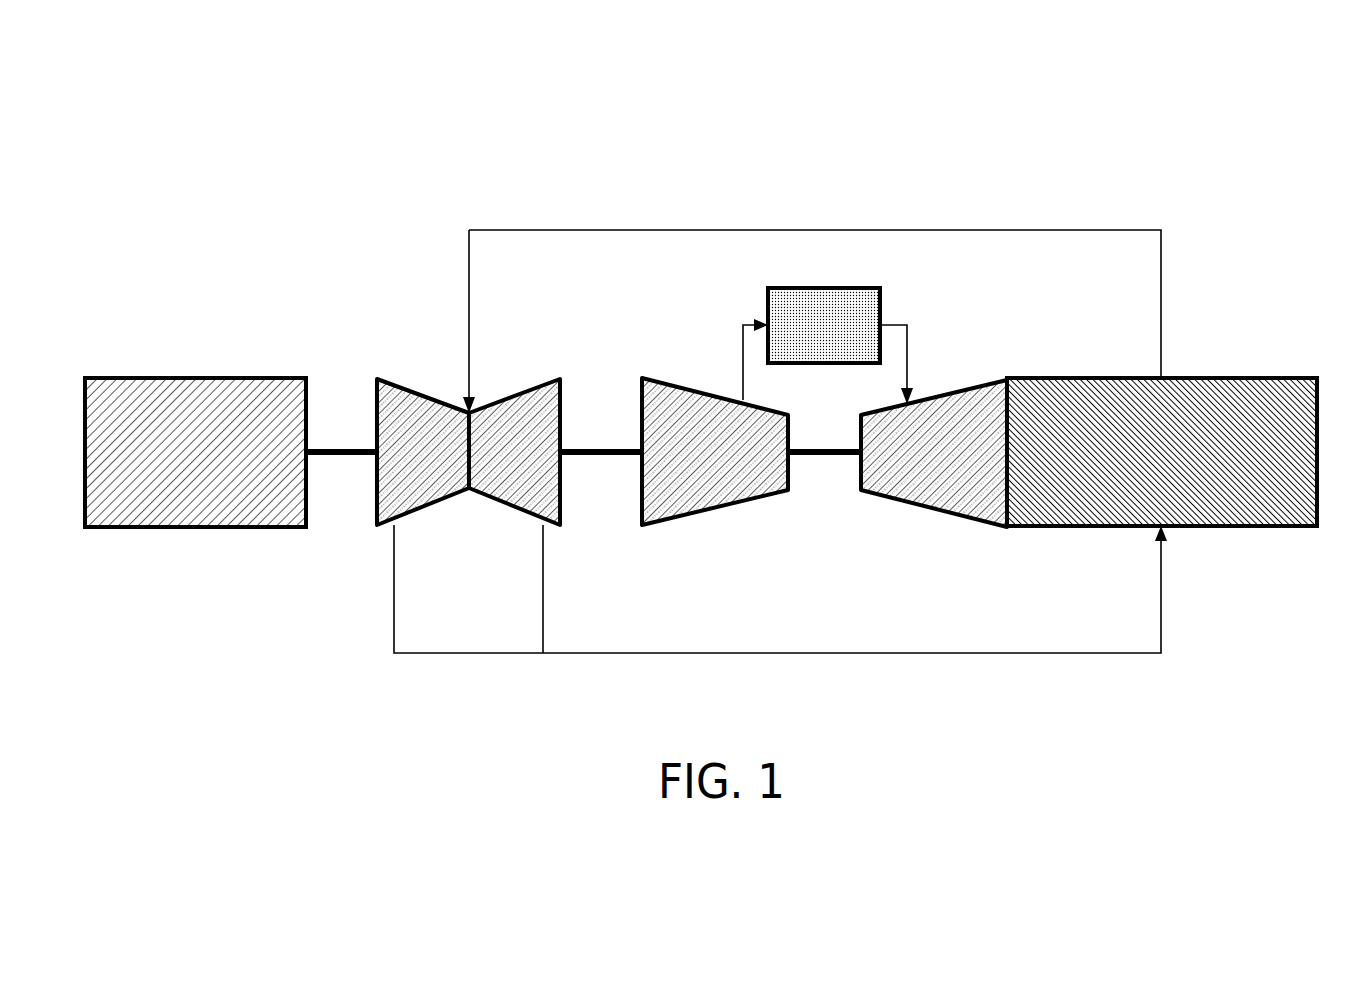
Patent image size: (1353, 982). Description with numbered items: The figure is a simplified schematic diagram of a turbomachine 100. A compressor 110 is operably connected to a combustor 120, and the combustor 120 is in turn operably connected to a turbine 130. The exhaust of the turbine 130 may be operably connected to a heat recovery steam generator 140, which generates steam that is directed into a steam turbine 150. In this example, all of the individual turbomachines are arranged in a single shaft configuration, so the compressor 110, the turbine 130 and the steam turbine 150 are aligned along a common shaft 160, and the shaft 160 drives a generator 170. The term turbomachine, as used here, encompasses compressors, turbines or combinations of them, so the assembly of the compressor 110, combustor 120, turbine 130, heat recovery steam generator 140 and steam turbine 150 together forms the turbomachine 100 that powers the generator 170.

The turbomachine 100 is at (912, 120).
The compressor 110 is at (713, 510).
The combustor 120 is at (768, 298).
The turbine 130 is at (947, 508).
The heat recovery steam generator 140 is at (1290, 528).
The steam turbine 150 is at (483, 500).
The shaft 160 is at (345, 447).
The generator 170 is at (167, 377).